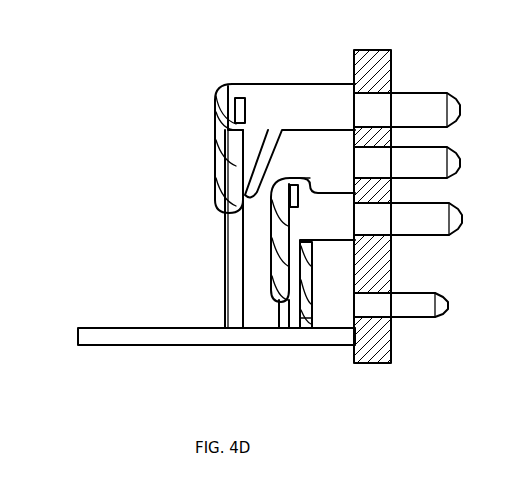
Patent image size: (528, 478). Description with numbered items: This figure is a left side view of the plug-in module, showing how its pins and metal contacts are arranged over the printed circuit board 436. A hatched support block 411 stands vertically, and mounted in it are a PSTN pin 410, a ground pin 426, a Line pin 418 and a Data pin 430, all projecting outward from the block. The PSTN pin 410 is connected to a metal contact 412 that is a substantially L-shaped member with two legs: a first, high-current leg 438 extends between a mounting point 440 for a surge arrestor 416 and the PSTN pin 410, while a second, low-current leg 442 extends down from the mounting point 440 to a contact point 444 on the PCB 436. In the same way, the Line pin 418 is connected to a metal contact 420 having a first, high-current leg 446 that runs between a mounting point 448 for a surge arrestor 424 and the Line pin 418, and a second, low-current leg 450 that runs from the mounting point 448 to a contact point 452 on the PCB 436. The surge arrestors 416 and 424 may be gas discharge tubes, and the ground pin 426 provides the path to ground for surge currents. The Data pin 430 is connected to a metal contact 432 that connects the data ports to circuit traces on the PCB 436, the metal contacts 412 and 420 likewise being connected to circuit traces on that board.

The PSTN pin 410 is at (462, 110).
The support block 411 is at (378, 50).
The metal contact 412 is at (299, 119).
The surge arrestor 416 is at (216, 148).
The Line pin 418 is at (464, 217).
The metal contact 420 is at (339, 231).
The surge arrestor 424 is at (274, 302).
The ground pin 426 is at (462, 170).
The Data pin 430 is at (450, 303).
The metal contact 432 is at (352, 330).
The printed circuit board 436 is at (140, 327).
The first leg 438 is at (312, 82).
The mounting point 440 is at (235, 108).
The second leg 442 is at (226, 240).
The contact point 444 is at (226, 326).
The first leg 446 is at (342, 191).
The mounting point 448 is at (296, 182).
The second leg 450 is at (306, 276).
The contact point 452 is at (305, 323).